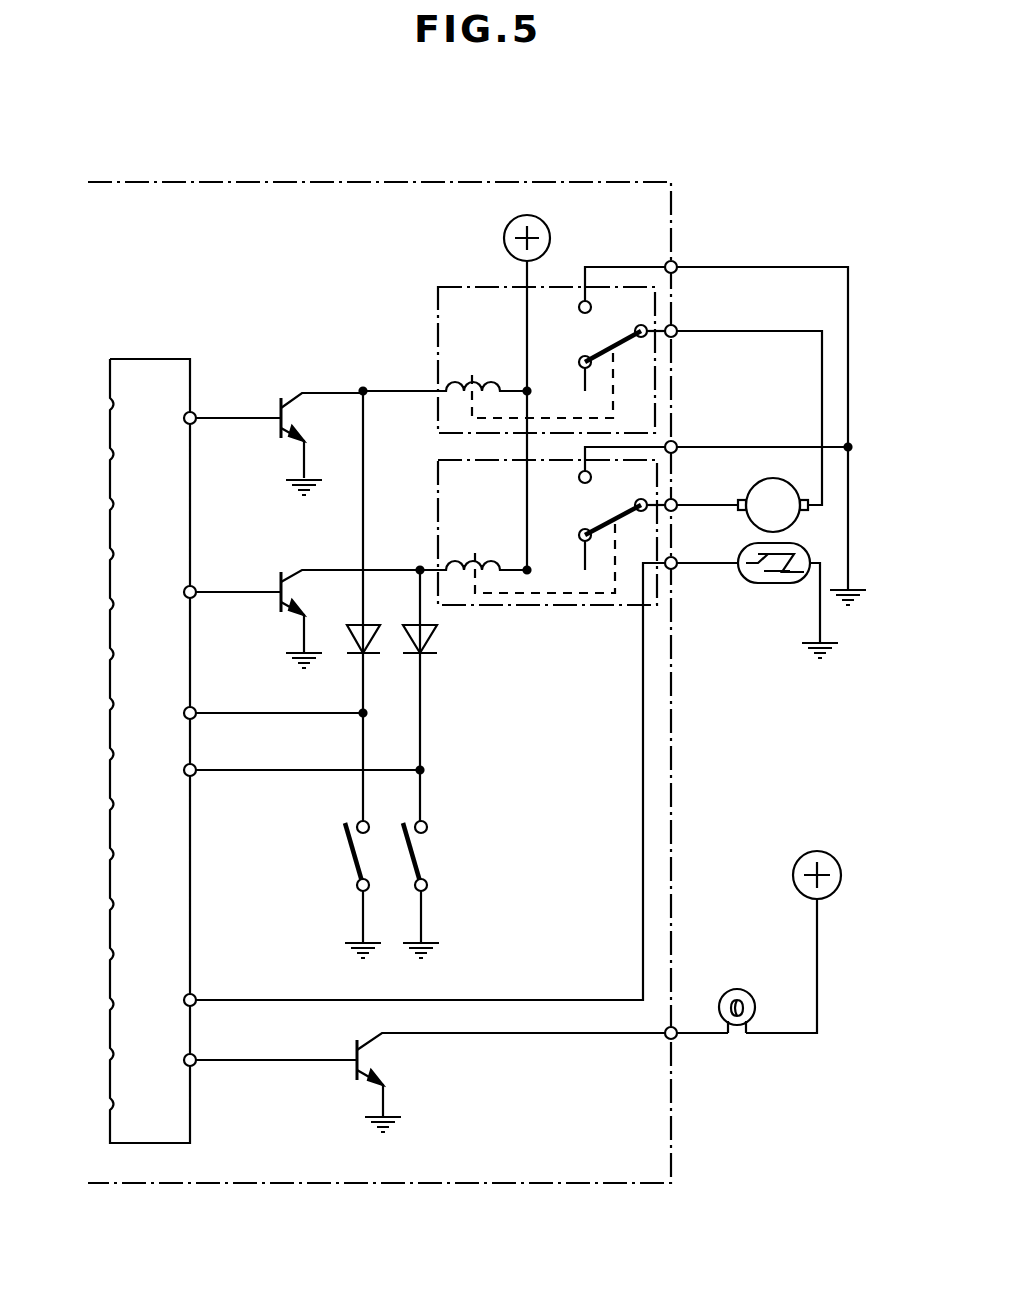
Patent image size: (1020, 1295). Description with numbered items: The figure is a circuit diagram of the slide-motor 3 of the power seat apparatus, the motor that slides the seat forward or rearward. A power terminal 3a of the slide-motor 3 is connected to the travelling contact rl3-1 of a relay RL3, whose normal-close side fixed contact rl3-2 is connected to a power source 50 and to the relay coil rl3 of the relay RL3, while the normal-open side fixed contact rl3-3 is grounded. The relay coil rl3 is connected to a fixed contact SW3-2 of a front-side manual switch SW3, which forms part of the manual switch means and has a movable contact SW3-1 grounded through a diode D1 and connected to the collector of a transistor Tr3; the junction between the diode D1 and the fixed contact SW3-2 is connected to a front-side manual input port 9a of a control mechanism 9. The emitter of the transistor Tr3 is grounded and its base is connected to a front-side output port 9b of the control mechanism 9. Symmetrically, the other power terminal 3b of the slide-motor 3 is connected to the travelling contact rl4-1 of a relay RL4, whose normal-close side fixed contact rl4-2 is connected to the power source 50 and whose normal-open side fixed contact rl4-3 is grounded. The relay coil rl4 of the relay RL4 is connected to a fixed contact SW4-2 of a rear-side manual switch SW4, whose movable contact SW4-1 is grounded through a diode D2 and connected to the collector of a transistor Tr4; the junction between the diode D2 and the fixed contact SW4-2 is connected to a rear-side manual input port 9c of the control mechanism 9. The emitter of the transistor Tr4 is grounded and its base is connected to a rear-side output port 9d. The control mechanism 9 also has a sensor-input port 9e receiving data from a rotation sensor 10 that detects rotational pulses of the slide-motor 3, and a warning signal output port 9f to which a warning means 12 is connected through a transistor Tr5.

The control mechanism 9 is at (162, 359).
The front-side manual input port 9a is at (196, 708).
The front-side output port 9b is at (196, 412).
The rear-side manual input port 9c is at (196, 765).
The rear-side output port 9d is at (196, 587).
The sensor-input port 9e is at (196, 996).
The warning signal output port 9f is at (196, 1056).
The transistor Tr3 is at (294, 392).
The transistor Tr4 is at (294, 576).
The transistor Tr5 is at (385, 1062).
The power source 50 is at (505, 230).
The relay RL3 is at (480, 283).
The relay RL4 is at (566, 608).
The relay coil rl3 is at (468, 380).
The travelling contact rl3-1 is at (638, 325).
The normal-close side fixed contact rl3-2 is at (578, 364).
The normal-open side fixed contact rl3-3 is at (584, 300).
The relay coil rl4 is at (470, 560).
The travelling contact rl4-1 is at (640, 499).
The normal-close side fixed contact rl4-2 is at (579, 537).
The normal-open side fixed contact rl4-3 is at (579, 477).
The slide-motor 3 is at (793, 524).
The power terminal 3a is at (808, 512).
The power terminal 3b is at (740, 516).
The rotation sensor 10 is at (765, 585).
The warning means 12 is at (737, 989).
The diode D1 is at (348, 635).
The diode D2 is at (436, 632).
The front-side manual switch SW3 is at (342, 850).
The movable contact SW3-1 is at (357, 888).
The fixed contact SW3-2 is at (360, 822).
The rear-side manual switch SW4 is at (420, 860).
The movable contact SW4-1 is at (427, 885).
The fixed contact SW4-2 is at (424, 821).